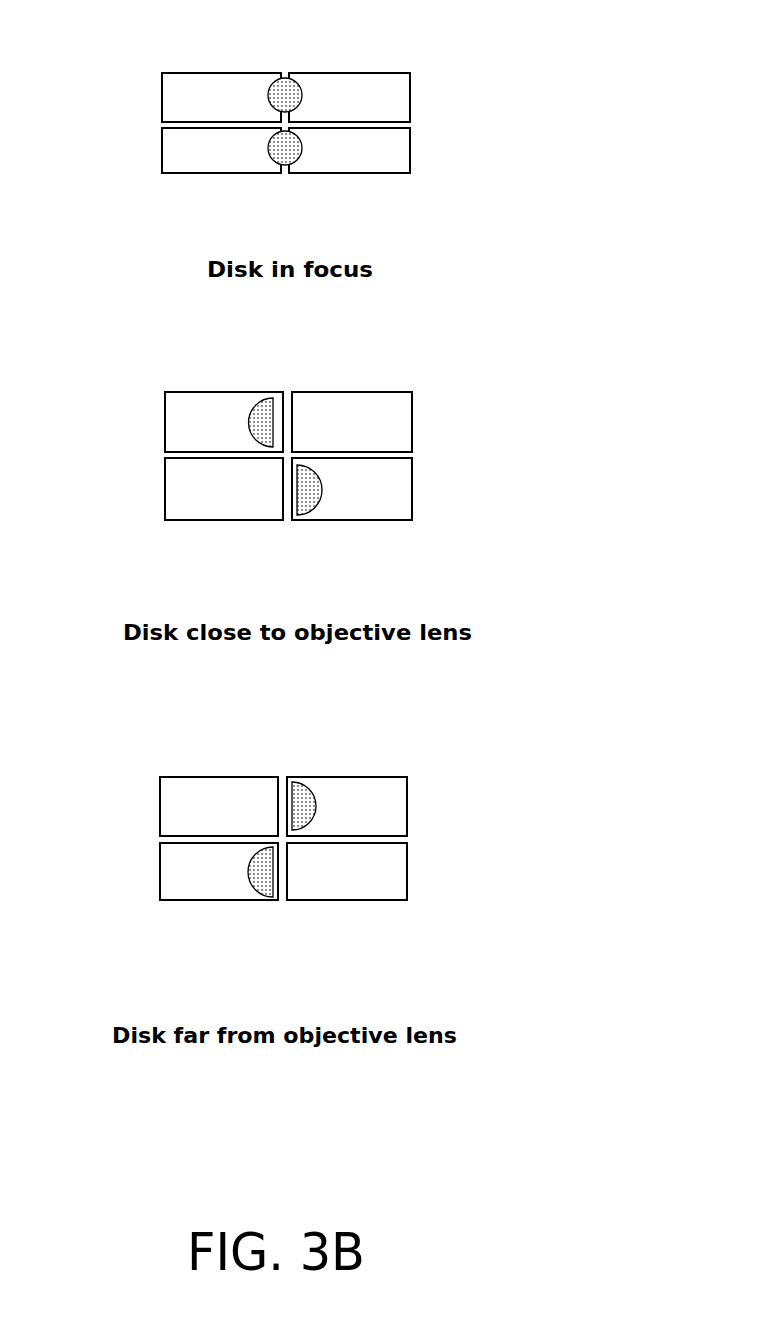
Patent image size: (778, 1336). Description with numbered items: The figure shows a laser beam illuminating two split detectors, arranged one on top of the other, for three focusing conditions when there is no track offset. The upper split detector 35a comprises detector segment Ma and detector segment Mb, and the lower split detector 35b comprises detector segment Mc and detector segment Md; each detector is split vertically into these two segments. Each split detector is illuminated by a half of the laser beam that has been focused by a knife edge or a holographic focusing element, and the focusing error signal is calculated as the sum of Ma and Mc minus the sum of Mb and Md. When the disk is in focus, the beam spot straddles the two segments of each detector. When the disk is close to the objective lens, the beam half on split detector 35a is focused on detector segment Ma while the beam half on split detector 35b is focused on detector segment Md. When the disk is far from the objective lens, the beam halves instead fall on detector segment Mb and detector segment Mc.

The first photodetector (upper detector row) 35a is at (162, 100).
The second photodetector (lower detector row) 35b is at (162, 152).
The detector segment Ma is at (212, 75).
The detector segment Mb is at (325, 75).
The detector segment Mc is at (210, 173).
The detector segment Md is at (335, 173).